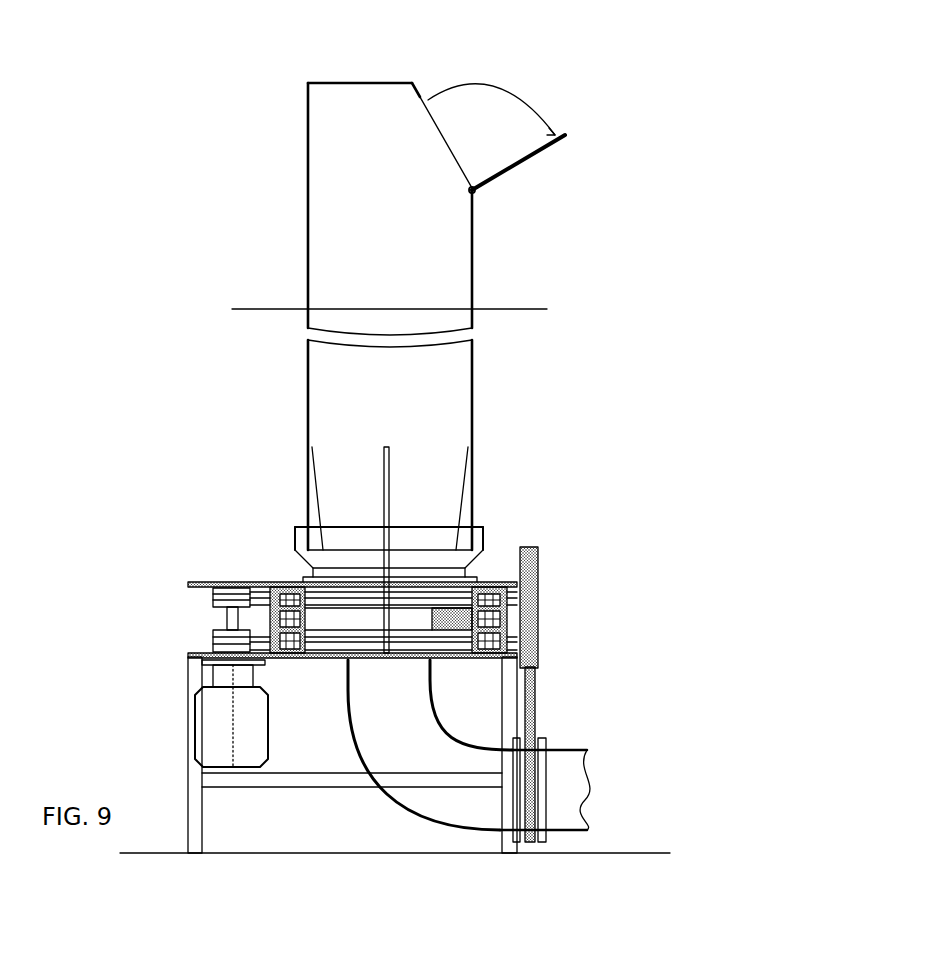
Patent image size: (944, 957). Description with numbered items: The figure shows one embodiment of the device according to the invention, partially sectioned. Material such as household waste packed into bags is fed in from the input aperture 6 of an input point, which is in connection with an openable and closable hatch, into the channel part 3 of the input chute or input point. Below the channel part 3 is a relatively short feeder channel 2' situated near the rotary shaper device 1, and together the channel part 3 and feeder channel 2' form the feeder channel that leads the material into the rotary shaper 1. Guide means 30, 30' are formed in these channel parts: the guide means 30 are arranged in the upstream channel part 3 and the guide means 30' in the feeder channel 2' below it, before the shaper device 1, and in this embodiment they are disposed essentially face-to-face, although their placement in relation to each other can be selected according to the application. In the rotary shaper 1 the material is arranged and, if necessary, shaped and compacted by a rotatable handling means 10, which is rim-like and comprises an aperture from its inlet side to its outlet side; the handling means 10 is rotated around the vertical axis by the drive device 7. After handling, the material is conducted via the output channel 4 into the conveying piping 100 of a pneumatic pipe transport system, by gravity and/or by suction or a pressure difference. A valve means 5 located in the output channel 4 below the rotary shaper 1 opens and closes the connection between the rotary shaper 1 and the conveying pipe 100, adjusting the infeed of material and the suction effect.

The rotary shaper device 1 is at (270, 582).
The feeder channel 2' is at (345, 547).
The channel part 3 is at (328, 358).
The output channel 4 is at (442, 803).
The valve means 5 is at (540, 830).
The input aperture 6 is at (442, 114).
The drive device 7 is at (233, 707).
The handling means 10 is at (300, 610).
The guide means 30 is at (414, 491).
The guide means 30' is at (394, 543).
The conveying piping 100 is at (580, 777).